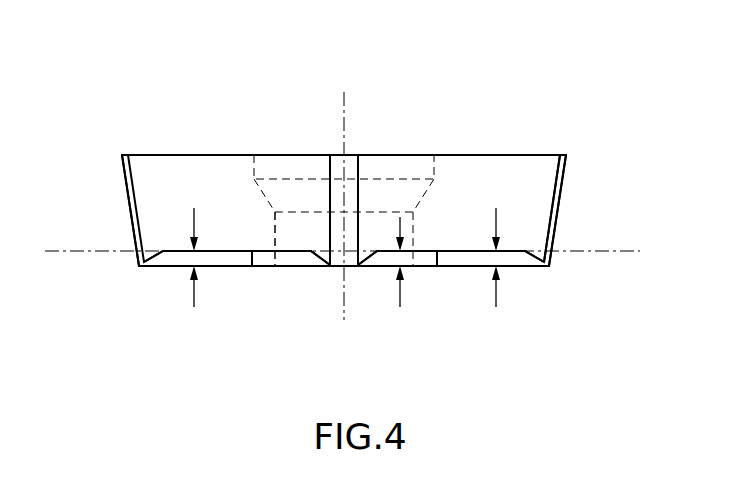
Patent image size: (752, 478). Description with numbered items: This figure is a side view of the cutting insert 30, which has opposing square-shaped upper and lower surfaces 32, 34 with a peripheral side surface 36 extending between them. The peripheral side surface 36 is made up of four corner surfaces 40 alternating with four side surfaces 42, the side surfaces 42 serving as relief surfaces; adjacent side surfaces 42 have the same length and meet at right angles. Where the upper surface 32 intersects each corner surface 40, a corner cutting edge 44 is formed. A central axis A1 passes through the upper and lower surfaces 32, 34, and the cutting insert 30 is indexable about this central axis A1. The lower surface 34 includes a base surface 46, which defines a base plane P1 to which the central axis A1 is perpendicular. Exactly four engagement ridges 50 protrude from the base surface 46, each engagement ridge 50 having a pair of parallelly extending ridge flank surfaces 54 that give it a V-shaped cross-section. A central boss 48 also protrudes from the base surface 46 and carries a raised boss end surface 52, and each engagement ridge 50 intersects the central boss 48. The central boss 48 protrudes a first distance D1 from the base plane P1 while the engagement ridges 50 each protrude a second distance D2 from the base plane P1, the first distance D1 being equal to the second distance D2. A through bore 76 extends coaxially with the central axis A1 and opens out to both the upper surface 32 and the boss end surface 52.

The cutting insert 30 is at (491, 78).
The upper surface 32 is at (239, 142).
The lower surface 34 is at (166, 280).
The peripheral side surface 36 is at (532, 203).
The corner surface 40 is at (124, 172).
The side surface 42 is at (215, 180).
The corner cutting edge 44 is at (122, 155).
The base surface 46 is at (464, 281).
The central boss 48 is at (292, 281).
The engagement ridge 50 is at (150, 270).
The boss end surface 52 is at (283, 267).
The ridge flank surface 54 is at (312, 267).
The through bore 76 is at (306, 142).
The central axis A1 is at (344, 192).
The base plane P1 is at (358, 251).
The first distance D1 is at (398, 276).
The second distance D2 is at (343, 271).